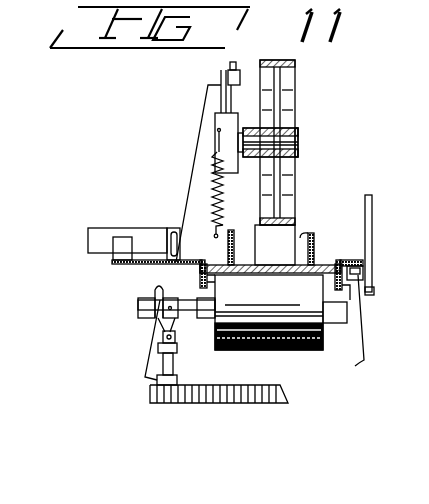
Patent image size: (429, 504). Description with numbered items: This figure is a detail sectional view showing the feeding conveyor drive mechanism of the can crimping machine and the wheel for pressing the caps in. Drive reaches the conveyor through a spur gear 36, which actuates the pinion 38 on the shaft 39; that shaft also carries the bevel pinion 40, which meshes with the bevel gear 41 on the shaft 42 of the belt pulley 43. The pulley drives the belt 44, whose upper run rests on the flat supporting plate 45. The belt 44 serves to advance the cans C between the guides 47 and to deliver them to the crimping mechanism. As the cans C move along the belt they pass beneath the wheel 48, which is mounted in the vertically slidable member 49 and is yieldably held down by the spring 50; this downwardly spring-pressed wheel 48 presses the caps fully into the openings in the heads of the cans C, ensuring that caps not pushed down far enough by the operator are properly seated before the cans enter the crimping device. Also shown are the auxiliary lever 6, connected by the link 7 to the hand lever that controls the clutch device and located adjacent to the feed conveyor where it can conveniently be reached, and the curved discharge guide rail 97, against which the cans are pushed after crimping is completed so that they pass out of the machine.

The auxiliary lever 6 is at (375, 213).
The link 7 is at (375, 290).
The spur gear 36 is at (245, 390).
The pinion 38 is at (150, 398).
The shaft 39 is at (174, 363).
The bevel pinion 40 is at (163, 337).
The bevel gear 41 is at (155, 292).
The shaft 42 is at (187, 300).
The belt pulley 43 is at (313, 328).
The belt 44 is at (265, 270).
The flat supporting plate 45 is at (262, 272).
The guides 47 is at (234, 234).
The wheel 48 is at (293, 101).
The vertically slidable member 49 is at (218, 130).
The spring 50 is at (215, 181).
The curved discharge guide rail 97 is at (113, 228).
The cans C is at (296, 232).